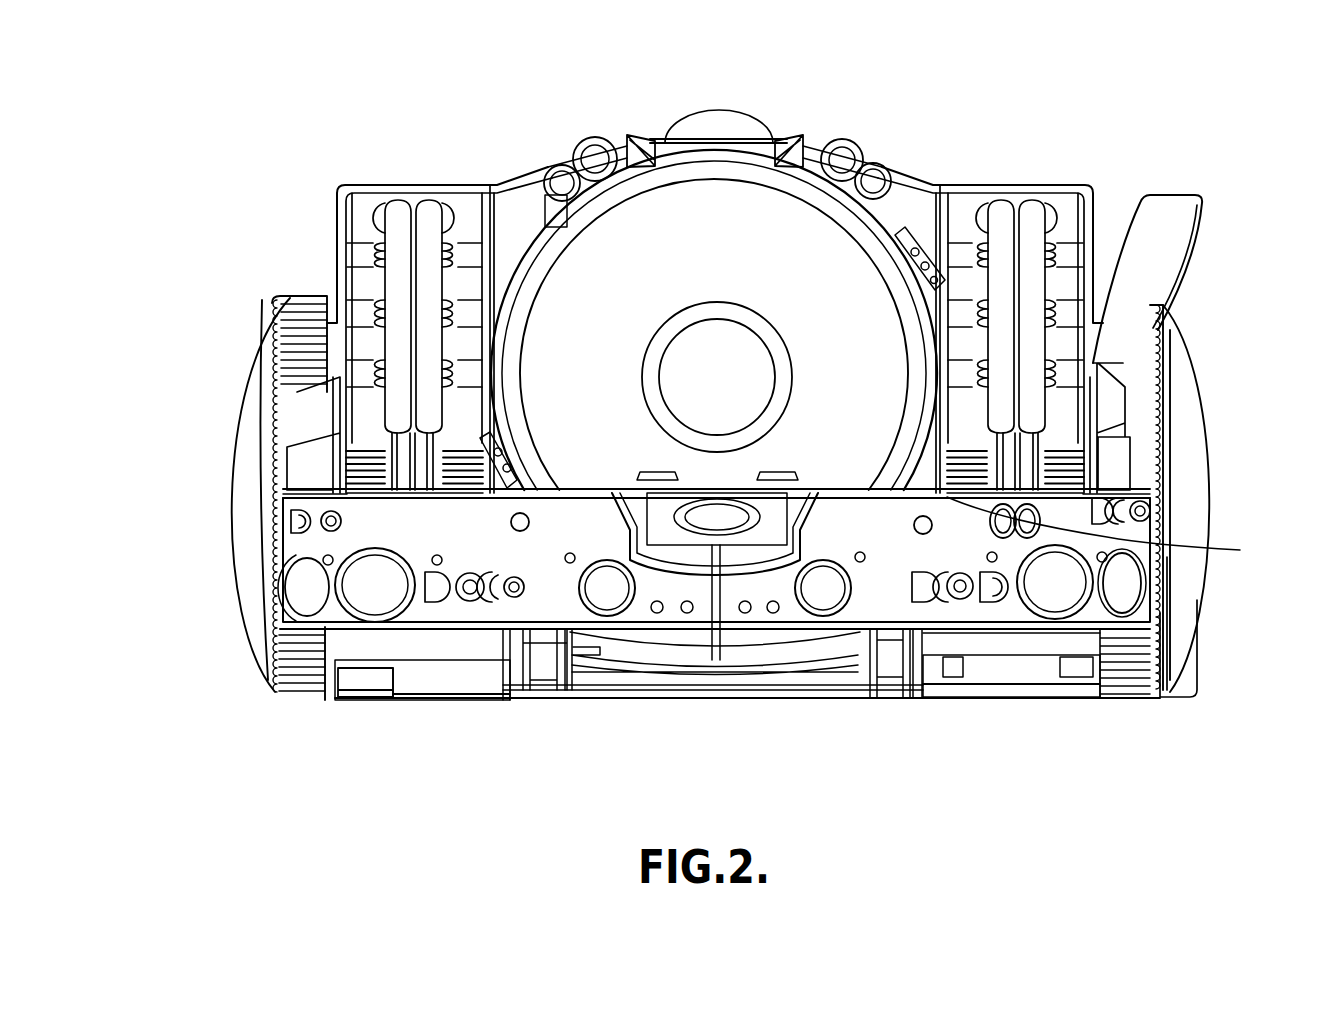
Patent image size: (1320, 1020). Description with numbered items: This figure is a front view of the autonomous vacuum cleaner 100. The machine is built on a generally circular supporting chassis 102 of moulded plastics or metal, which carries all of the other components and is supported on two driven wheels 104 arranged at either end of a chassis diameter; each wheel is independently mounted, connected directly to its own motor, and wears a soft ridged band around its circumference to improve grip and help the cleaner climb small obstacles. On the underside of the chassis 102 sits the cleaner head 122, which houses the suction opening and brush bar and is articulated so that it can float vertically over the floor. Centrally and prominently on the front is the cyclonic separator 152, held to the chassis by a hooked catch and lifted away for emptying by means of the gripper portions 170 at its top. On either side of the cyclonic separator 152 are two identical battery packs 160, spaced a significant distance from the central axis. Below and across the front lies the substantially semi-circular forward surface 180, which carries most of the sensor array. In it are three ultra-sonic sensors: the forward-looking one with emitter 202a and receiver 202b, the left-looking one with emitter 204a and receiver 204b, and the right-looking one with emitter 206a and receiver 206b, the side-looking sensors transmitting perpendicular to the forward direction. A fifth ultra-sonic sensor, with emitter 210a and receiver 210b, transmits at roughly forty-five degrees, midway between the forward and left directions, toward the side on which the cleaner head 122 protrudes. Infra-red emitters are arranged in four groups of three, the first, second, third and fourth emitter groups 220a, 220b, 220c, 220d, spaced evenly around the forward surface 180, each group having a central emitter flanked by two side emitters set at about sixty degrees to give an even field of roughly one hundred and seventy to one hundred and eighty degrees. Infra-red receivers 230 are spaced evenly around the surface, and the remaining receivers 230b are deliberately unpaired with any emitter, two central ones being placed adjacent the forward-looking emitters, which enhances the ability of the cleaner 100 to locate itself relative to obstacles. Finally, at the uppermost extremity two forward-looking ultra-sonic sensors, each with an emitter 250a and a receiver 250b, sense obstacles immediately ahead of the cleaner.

The vacuum cleaner 100 is at (1083, 103).
The chassis 102 is at (442, 613).
The driven wheels 104 is at (247, 407).
The cleaner head 122 is at (353, 700).
The cyclonic separator 152 is at (710, 249).
The battery packs 160 is at (462, 210).
The gripper portions 170 is at (640, 143).
The forward surface 180 is at (565, 520).
The emitter 202a is at (823, 595).
The receiver 202b is at (607, 595).
The emitter 204a is at (1122, 578).
The receiver 204b is at (1053, 593).
The emitter 206a is at (303, 590).
The receiver 206b is at (357, 603).
The emitter 210a is at (940, 493).
The receiver 210b is at (1240, 552).
The first emitter group 220a is at (1140, 513).
The second emitter group 220b is at (957, 600).
The third emitter group 220c is at (473, 597).
The fourth emitter group 220d is at (292, 522).
The receivers 230 is at (435, 555).
The remaining receivers 230b is at (743, 613).
The emitter 250a is at (592, 157).
The receiver 250b is at (560, 180).